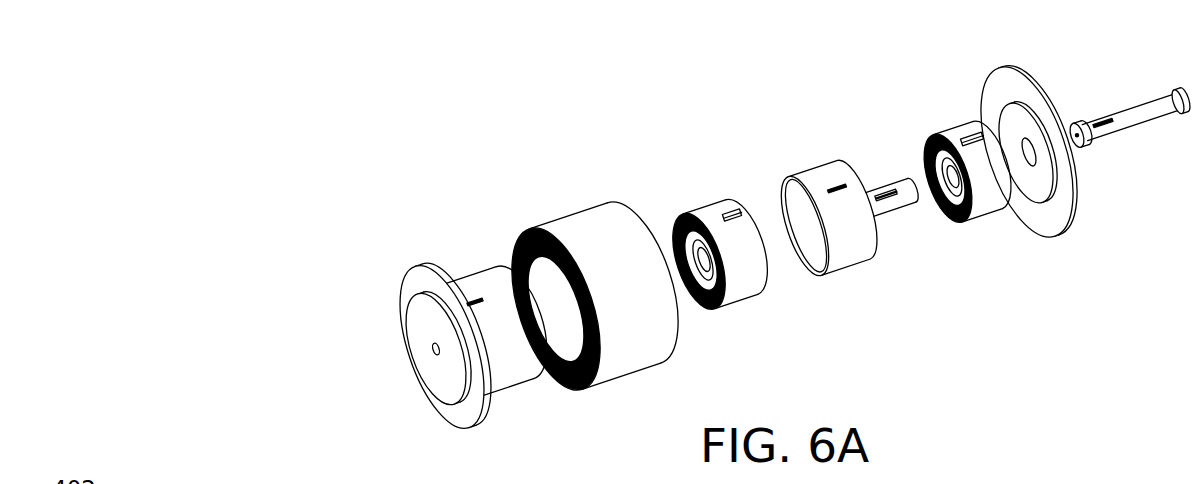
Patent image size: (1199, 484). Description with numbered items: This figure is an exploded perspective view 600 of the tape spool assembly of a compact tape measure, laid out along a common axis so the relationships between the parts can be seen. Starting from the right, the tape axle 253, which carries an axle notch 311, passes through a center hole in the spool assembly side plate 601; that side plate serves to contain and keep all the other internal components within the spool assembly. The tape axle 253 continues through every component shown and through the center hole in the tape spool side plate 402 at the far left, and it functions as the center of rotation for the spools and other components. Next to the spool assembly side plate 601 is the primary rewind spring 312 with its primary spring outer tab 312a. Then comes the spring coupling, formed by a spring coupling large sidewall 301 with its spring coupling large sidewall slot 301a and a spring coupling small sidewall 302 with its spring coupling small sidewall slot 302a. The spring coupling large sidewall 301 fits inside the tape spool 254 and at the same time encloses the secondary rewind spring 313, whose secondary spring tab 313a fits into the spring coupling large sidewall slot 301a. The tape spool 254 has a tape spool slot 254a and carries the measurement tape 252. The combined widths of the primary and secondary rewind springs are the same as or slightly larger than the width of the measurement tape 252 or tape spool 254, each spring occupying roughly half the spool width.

The exploded perspective view 600 is at (604, 127).
The tape spool side plate 402 is at (412, 268).
The tape spool 254 is at (487, 280).
The tape spool slot 254a is at (476, 296).
The measurement tape 252 is at (570, 228).
The secondary rewind spring 313 is at (742, 292).
The secondary spring tab 313a is at (724, 220).
The spring coupling large sidewall 301 is at (852, 252).
The spring coupling large sidewall slot 301a is at (836, 185).
The spring coupling small sidewall 302 is at (908, 184).
The spring coupling small sidewall slot 302a is at (880, 190).
The primary rewind spring 312 is at (990, 212).
The primary spring outer tab 312a is at (973, 135).
The spool assembly side plate 601 is at (1004, 82).
The axle notch 311 is at (1105, 118).
The tape axle 253 is at (1160, 95).